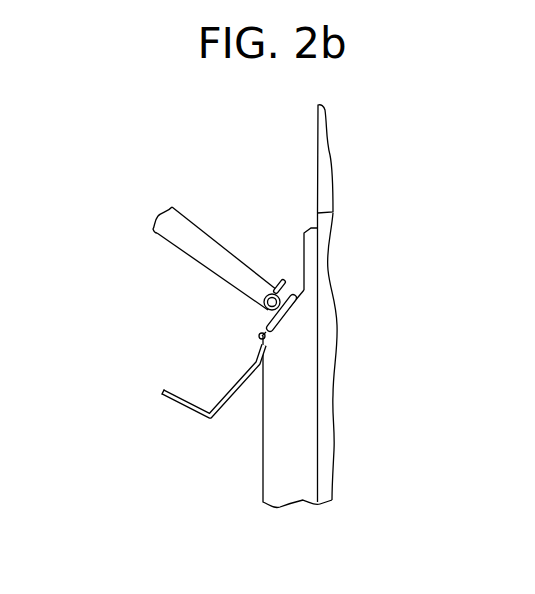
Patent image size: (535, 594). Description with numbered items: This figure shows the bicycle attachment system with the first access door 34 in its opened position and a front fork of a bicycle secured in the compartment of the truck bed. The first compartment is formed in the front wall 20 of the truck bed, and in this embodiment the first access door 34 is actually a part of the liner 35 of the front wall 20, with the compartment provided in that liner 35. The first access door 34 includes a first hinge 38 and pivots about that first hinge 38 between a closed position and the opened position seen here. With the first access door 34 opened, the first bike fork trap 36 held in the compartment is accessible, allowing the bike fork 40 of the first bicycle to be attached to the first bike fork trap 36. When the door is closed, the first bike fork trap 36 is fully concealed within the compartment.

The front wall 20 is at (317, 402).
The first access door 34 is at (183, 410).
The liner 35 is at (263, 475).
The first bike fork trap 36 is at (284, 292).
The first hinge 38 is at (259, 336).
The bike fork 40 is at (174, 239).